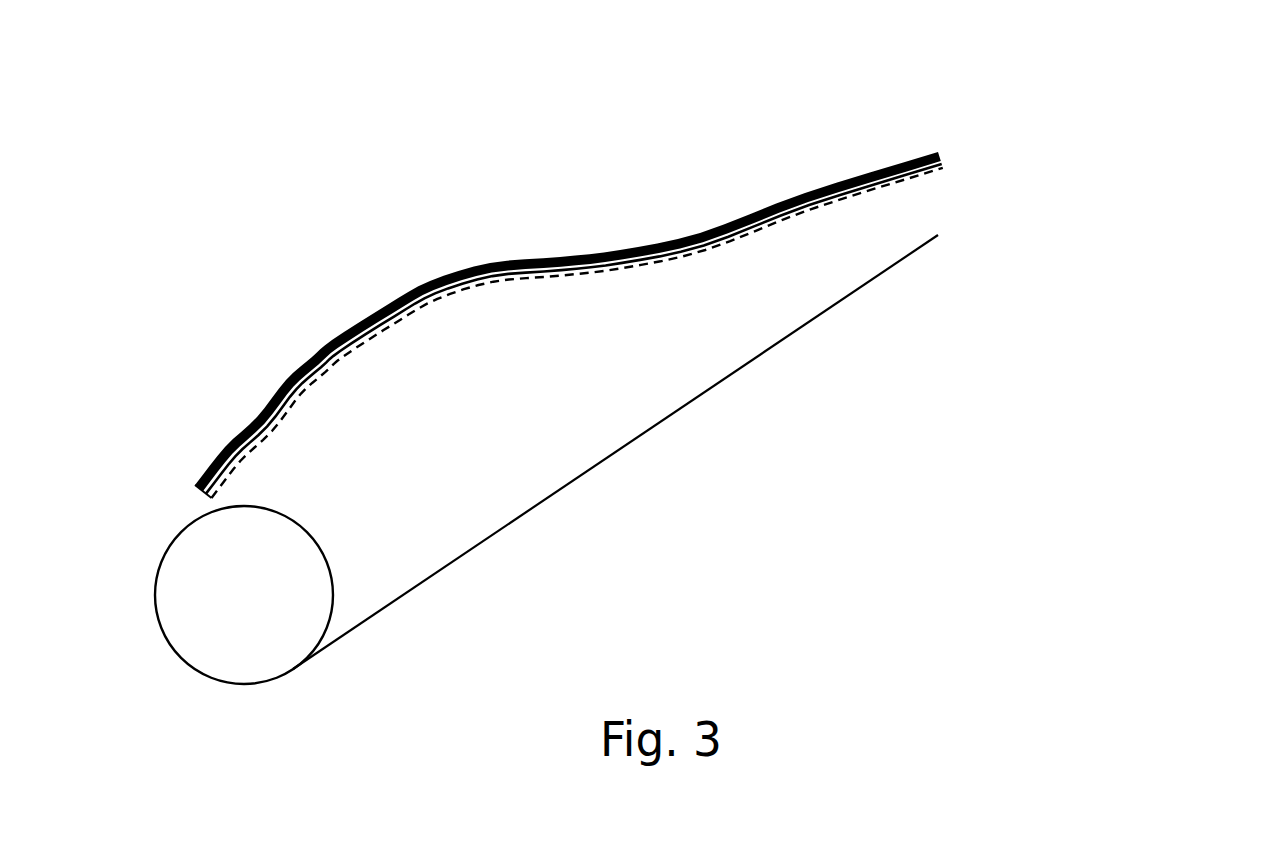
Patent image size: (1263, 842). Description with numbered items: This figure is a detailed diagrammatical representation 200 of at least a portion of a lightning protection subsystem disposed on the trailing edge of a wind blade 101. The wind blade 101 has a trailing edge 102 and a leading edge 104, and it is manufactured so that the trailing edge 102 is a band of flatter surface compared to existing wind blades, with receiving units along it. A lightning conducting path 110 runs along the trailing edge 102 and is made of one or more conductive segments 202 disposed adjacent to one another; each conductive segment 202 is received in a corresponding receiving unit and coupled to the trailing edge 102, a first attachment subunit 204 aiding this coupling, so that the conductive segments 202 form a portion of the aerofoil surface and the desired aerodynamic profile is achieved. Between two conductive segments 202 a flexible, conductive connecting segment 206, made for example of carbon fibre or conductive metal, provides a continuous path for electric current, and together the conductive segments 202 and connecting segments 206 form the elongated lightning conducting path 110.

The detailed diagrammatical representation 200 is at (1097, 140).
The wind blade 101 is at (508, 467).
The leading edge 104 is at (673, 413).
The trailing edge 102 is at (805, 183).
The lightning conducting path 110 is at (487, 264).
The conductive segments 202 is at (249, 441).
The first attachment subunit 204 is at (237, 493).
The connecting segments 206 is at (288, 377).